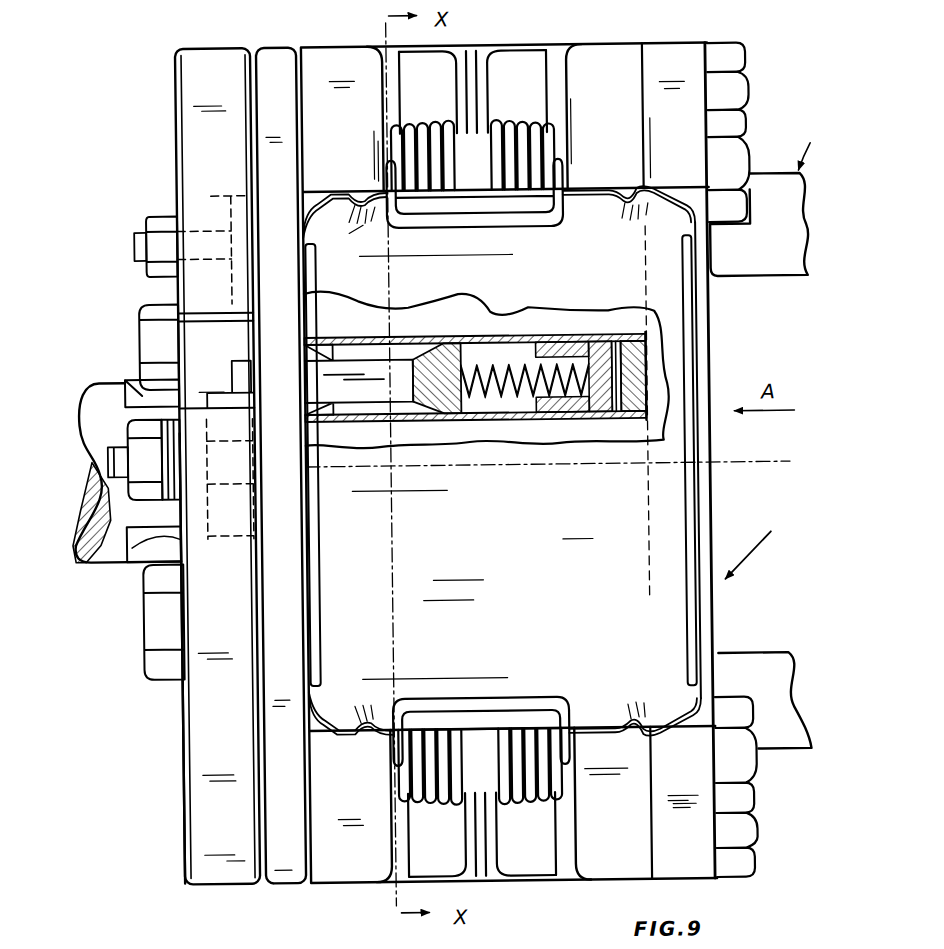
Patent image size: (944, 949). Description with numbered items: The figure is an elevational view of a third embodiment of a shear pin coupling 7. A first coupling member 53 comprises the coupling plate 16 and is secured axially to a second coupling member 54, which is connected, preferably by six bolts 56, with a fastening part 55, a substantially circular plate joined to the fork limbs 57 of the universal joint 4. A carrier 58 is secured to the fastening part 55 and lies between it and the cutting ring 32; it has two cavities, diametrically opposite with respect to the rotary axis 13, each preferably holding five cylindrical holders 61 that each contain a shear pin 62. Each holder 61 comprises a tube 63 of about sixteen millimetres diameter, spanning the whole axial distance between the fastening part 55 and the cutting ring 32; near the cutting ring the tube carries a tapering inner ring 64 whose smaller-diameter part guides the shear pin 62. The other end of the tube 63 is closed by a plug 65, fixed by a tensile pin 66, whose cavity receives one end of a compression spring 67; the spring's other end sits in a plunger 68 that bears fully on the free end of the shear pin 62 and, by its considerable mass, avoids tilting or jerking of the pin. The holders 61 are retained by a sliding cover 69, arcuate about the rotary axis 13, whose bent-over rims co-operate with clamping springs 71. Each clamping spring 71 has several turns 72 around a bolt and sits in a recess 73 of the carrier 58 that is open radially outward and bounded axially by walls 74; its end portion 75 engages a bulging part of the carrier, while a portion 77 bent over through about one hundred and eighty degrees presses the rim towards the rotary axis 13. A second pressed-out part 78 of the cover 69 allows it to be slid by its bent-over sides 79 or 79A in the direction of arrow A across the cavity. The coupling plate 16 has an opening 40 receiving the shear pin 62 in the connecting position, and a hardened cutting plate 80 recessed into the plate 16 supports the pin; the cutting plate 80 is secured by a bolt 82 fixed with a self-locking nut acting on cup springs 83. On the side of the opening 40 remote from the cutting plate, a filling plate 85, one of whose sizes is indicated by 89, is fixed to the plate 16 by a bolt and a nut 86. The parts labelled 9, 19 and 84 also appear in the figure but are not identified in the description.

The universal joint 4 is at (802, 143).
The shear pin coupling 7 is at (751, 544).
The mounting bracket 9 is at (108, 376).
The rotary axis 13 is at (758, 470).
The coupling plate 16 is at (190, 92).
The bolt 19 is at (141, 301).
The cutting ring 32 is at (281, 58).
The opening 40 is at (213, 309).
The first coupling member 53 is at (180, 722).
The second coupling member 54 is at (609, 39).
The fastening part 55 is at (714, 620).
The bolts 56 is at (738, 128).
The fork limbs 57 is at (797, 266).
The carrier 58 is at (349, 50).
The cylindrical holder 61 is at (532, 416).
The shear pin 62 is at (380, 403).
The tube 63 is at (598, 422).
The tapering inner ring 64 is at (328, 422).
The plug 65 is at (642, 366).
The tensile pin 66 is at (636, 343).
The compression spring 67 is at (498, 345).
The plunger 68 is at (454, 336).
The sliding cover 69 is at (492, 627).
The clamping spring 71 is at (560, 152).
The turns 72 is at (547, 116).
The recess 73 is at (511, 66).
The walls 74 is at (392, 83).
The end portion 75 is at (484, 88).
The bent-over portion 77 is at (531, 222).
The second pressed out part 78 is at (355, 224).
The bent-over side 79 is at (322, 582).
The bent-over side 79A is at (694, 540).
The cutting plate 80 is at (229, 544).
The bolt 82 is at (110, 436).
The cup springs 83 is at (180, 486).
The nut 84 is at (126, 500).
The filling plate 85 is at (222, 193).
The nut 86 is at (167, 211).
The size 89 is at (364, 948).